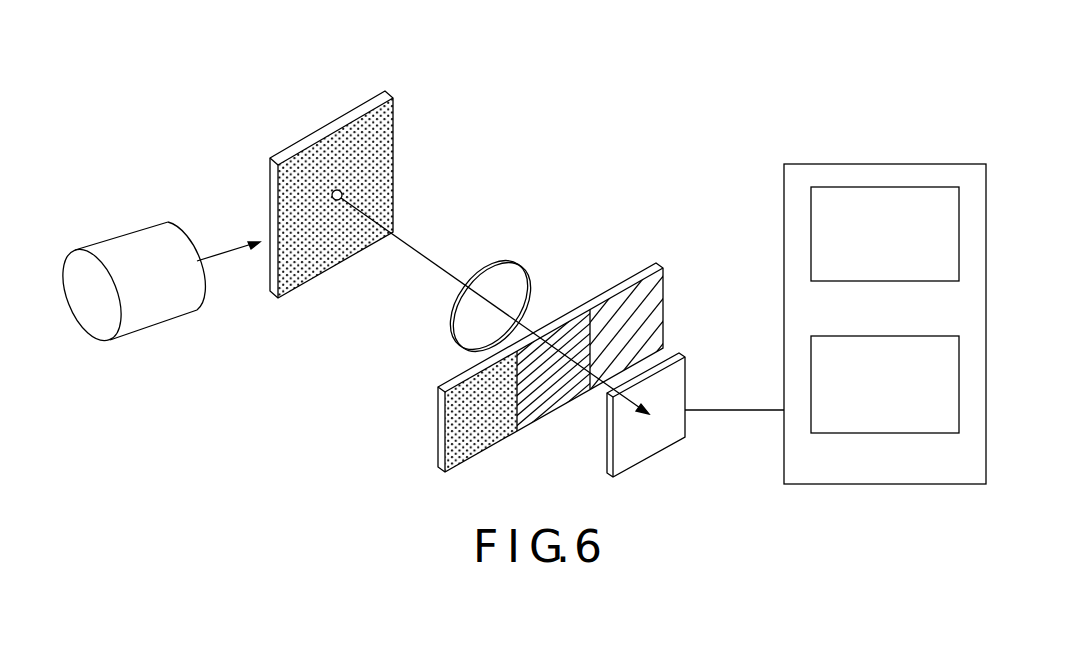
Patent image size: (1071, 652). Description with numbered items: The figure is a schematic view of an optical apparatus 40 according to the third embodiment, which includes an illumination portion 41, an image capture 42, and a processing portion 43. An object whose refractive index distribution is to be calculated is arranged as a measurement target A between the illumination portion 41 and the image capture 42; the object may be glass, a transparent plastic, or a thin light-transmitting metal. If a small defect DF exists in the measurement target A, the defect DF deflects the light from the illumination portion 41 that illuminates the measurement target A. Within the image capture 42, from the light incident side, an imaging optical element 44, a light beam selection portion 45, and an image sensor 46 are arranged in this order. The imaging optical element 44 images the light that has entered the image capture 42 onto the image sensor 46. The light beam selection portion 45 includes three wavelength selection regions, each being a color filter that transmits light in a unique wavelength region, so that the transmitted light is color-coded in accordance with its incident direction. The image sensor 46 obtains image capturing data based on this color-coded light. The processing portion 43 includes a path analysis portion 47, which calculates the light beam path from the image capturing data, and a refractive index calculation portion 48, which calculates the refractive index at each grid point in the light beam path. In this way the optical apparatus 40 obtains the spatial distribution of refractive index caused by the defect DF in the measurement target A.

The optical apparatus 40 is at (920, 57).
The illumination portion 41 is at (165, 326).
The image capture 42 is at (497, 216).
The processing portion 43 is at (883, 164).
The imaging optical element 44 is at (508, 266).
The light beam selection portion 45 is at (641, 265).
The image sensor 46 is at (676, 352).
The path analysis portion 47 is at (925, 281).
The refractive index calculation portion 48 is at (925, 433).
The measurement target A is at (283, 297).
The defect DF is at (336, 190).